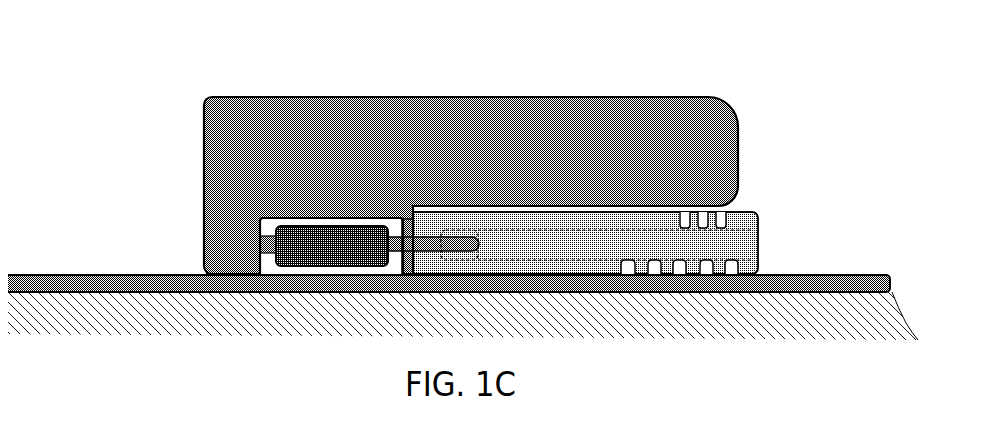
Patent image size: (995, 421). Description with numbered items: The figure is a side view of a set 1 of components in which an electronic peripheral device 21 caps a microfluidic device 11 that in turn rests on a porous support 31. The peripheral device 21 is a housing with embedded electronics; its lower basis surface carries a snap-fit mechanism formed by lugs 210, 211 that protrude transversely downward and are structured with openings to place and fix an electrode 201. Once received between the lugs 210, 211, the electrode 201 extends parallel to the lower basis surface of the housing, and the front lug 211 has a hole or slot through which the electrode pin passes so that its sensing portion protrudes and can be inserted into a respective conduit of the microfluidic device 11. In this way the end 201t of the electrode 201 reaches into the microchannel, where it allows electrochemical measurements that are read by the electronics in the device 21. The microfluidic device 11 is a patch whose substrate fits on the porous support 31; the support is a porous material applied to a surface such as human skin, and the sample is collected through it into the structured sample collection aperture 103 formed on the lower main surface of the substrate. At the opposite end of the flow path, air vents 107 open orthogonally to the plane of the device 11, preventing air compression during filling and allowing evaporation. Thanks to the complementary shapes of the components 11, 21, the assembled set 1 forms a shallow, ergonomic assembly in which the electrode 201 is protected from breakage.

The set of components 1 is at (473, 193).
The microfluidic device 11 is at (755, 222).
The electronic peripheral device 21 is at (345, 88).
The porous support 31 is at (121, 274).
The sample collection aperture 103 is at (724, 272).
The air vents 107 is at (722, 205).
The electrode 201 is at (322, 258).
The end of electrode 201t is at (458, 227).
The lug 210 is at (233, 266).
The front lug 211 is at (400, 267).